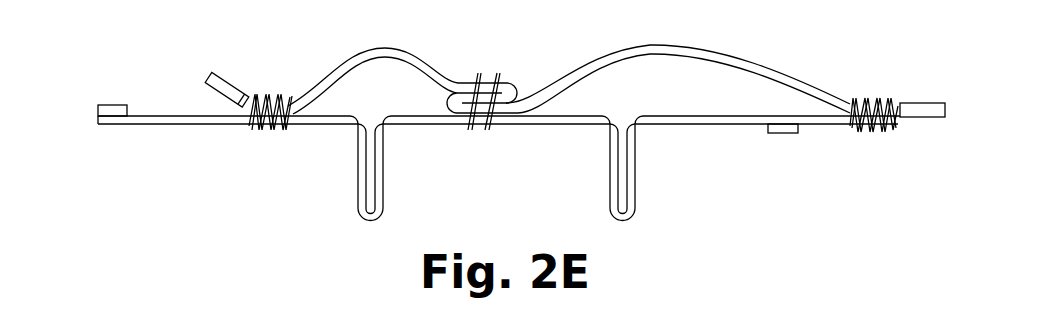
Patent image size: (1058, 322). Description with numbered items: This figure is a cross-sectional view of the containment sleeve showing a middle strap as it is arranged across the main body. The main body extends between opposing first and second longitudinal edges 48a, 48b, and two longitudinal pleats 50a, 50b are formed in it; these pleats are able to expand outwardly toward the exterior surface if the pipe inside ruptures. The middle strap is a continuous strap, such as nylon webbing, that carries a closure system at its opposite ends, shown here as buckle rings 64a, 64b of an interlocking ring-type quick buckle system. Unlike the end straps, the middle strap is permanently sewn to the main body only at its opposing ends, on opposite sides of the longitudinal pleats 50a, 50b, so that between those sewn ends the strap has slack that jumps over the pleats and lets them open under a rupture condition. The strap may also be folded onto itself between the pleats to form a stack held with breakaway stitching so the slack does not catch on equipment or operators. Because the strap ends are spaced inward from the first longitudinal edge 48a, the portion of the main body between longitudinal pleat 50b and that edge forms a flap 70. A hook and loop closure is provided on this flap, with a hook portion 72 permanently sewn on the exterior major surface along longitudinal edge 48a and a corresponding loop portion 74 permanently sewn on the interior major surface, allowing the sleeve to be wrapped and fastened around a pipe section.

The flap 70 is at (176, 116).
The hook portion 72 is at (118, 105).
The loop portion 74 is at (782, 133).
The first longitudinal edge 48a is at (98, 121).
The second longitudinal edge 48b is at (897, 121).
The first longitudinal pleat 50a is at (610, 158).
The second longitudinal pleat 50b is at (384, 180).
The buckle ring 64a is at (926, 103).
The buckle ring 64b is at (231, 80).